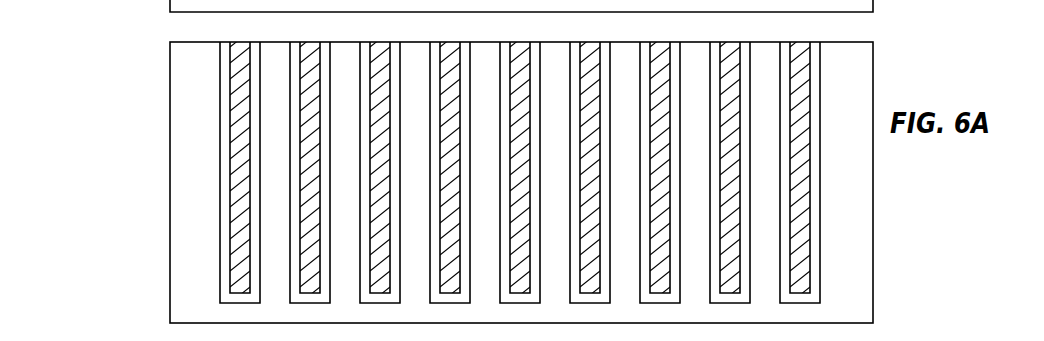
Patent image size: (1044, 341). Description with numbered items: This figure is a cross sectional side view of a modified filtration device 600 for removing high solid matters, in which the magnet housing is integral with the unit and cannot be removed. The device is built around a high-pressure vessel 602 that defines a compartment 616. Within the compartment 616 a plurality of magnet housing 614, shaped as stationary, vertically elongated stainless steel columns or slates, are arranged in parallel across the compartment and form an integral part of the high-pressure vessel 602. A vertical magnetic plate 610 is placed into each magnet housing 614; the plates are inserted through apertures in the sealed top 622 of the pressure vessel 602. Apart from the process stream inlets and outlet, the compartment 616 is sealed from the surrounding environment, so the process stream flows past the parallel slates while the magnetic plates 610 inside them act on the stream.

The filtration device 600 is at (888, 207).
The high-pressure vessel 602 is at (873, 272).
The vertical magnetic plate 610 is at (230, 172).
The magnet housing 614 is at (220, 122).
The compartment 616 is at (192, 252).
The sealed top 622 is at (843, 42).